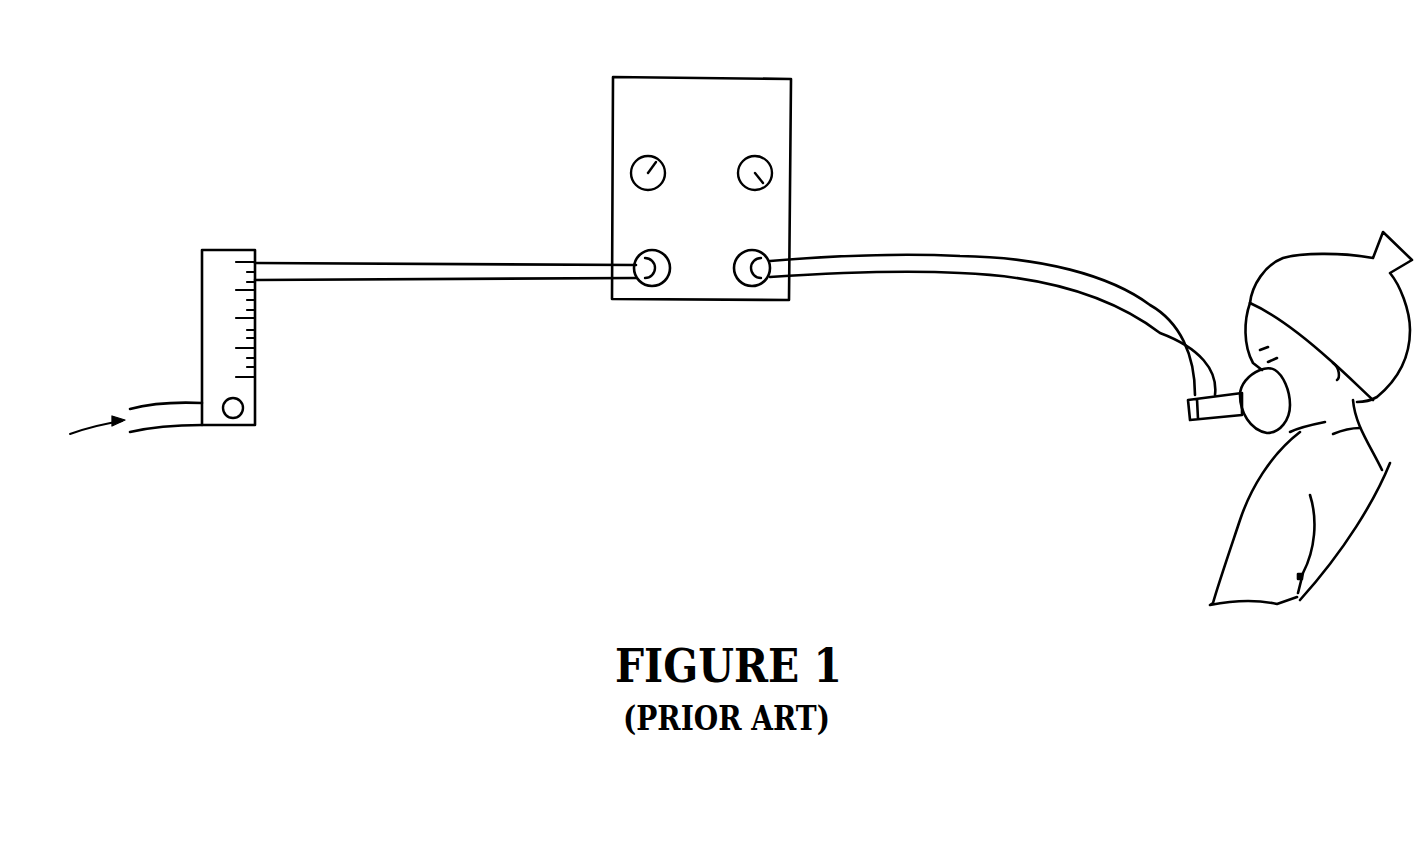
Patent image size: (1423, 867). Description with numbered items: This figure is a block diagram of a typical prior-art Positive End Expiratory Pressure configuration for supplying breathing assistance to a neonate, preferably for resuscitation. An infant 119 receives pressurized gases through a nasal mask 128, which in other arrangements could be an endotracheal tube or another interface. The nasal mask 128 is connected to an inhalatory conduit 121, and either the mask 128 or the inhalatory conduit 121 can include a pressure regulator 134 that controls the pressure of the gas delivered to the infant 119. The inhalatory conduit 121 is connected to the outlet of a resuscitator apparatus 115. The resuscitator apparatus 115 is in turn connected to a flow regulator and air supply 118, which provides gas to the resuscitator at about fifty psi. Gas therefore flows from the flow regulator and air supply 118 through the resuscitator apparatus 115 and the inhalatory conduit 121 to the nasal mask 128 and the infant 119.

The resuscitator apparatus 115 is at (792, 138).
The flow regulator and air supply 118 is at (225, 248).
The infant 119 is at (1328, 287).
The inhalatory conduit 121 is at (1127, 305).
The nasal mask 128 is at (1247, 367).
The pressure regulator 134 is at (1190, 418).